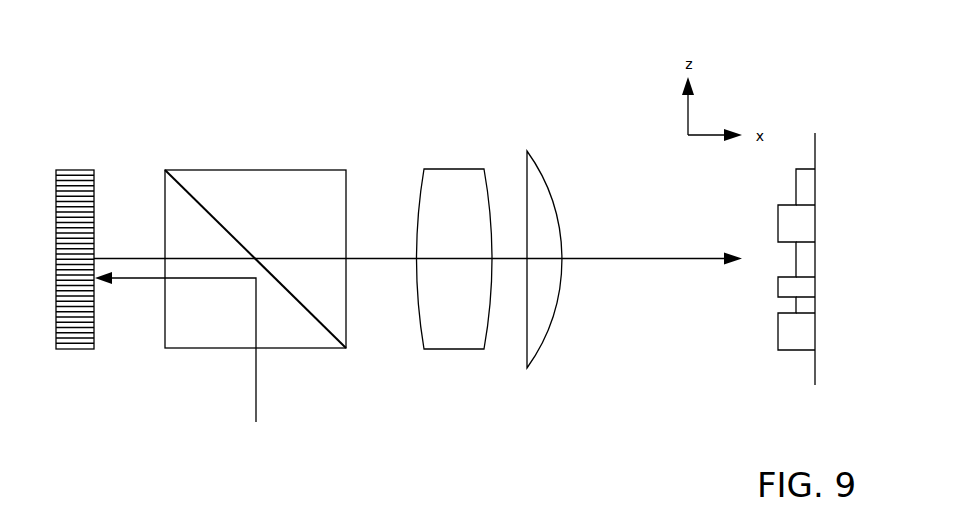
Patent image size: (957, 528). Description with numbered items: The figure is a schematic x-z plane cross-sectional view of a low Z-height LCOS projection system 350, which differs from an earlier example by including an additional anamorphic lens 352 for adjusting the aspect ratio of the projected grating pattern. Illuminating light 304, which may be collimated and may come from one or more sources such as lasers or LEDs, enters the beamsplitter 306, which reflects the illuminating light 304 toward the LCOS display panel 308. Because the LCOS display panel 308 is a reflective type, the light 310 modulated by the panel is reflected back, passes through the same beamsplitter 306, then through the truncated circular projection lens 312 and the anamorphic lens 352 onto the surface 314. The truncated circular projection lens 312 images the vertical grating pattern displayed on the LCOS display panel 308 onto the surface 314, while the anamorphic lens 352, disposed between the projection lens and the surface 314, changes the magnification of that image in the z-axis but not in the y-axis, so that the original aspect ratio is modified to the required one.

The low Z-height LCOS projection system 350 is at (240, 84).
The illuminating light 304 is at (256, 405).
The beamsplitter 306 is at (273, 170).
The LCOS display panel 308 is at (75, 168).
The light modulated by LCOS display panel 310 is at (357, 257).
The truncated circular projection lens 312 is at (440, 169).
The anamorphic lens 352 is at (535, 158).
The surface 314 is at (815, 150).